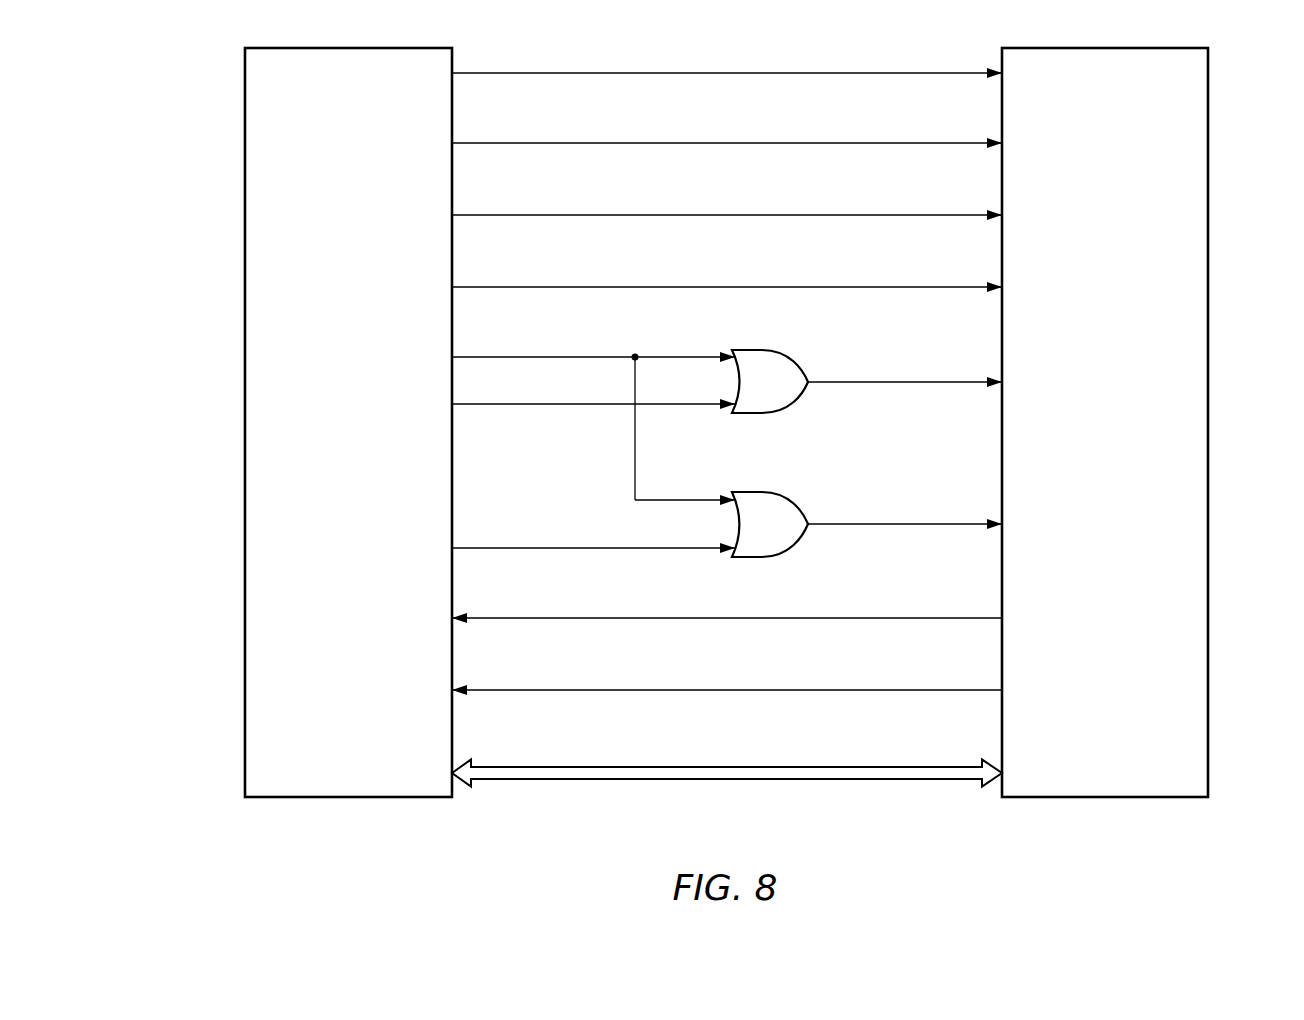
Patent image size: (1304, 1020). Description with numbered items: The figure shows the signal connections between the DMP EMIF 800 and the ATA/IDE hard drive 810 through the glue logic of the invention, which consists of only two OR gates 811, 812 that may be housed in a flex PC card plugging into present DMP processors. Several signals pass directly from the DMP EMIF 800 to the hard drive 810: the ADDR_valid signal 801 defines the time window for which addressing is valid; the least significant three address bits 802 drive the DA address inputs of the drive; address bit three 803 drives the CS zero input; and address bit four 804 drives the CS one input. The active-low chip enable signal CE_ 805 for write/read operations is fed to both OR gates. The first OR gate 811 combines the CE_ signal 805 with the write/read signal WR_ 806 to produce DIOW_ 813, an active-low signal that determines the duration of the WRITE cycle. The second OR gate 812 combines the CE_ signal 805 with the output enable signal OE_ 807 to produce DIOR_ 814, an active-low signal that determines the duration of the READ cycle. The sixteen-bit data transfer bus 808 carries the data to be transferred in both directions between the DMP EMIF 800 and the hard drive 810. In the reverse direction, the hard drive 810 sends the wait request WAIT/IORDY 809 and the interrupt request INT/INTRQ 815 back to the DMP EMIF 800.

The DMP EMIF 800 is at (245, 553).
The ATA/IDE hard drive 810 is at (1208, 553).
The ADDR_valid signal 801 is at (557, 72).
The A[2:0] address bits 802 is at (634, 143).
The A[3] address bit 803 is at (557, 215).
The A[4] address bit 804 is at (634, 287).
The CE_ chip enable signal 805 is at (557, 357).
The WR_ write/read signal 806 is at (557, 405).
The OE_ output enable signal 807 is at (557, 548).
The D[15:0] data transfer bus 808 is at (719, 780).
The WAIT/IORDY signal 809 is at (634, 619).
The OR gate 811 is at (783, 415).
The OR gate 812 is at (783, 558).
The DIOW_ signal 813 is at (905, 381).
The DIOR_ signal 814 is at (905, 526).
The INT/INTRQ signal 815 is at (557, 690).